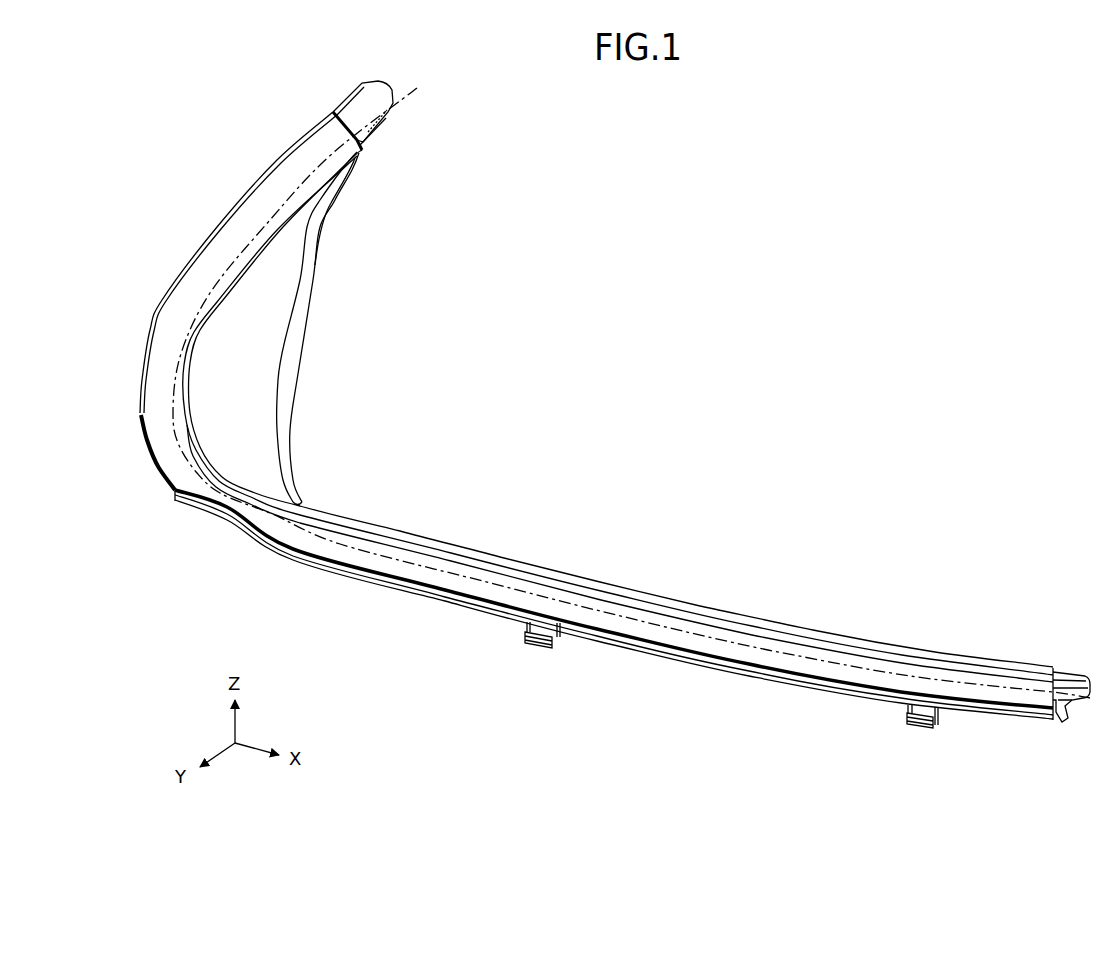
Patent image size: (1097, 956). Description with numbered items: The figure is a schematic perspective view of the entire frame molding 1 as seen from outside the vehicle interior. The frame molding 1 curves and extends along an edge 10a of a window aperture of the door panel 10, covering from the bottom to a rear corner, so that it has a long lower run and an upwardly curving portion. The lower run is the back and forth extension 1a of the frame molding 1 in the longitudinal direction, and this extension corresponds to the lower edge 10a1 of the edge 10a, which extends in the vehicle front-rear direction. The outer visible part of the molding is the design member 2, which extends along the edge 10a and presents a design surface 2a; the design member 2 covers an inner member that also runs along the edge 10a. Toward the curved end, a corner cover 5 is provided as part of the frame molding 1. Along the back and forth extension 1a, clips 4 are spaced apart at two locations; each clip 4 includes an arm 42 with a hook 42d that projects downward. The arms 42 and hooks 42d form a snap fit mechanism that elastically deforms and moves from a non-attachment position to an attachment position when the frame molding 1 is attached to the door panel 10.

The frame molding 1 is at (615, 431).
The back and forth extension 1a is at (826, 626).
The design member 2 is at (509, 550).
The design surface 2a is at (390, 568).
The clip 4 is at (725, 701).
The corner cover 5 is at (270, 363).
The arm 42 is at (523, 627).
The hook 42d is at (537, 641).
The door panel 10 is at (631, 401).
The edge 10a is at (631, 405).
The lower edge 10a1 is at (938, 678).